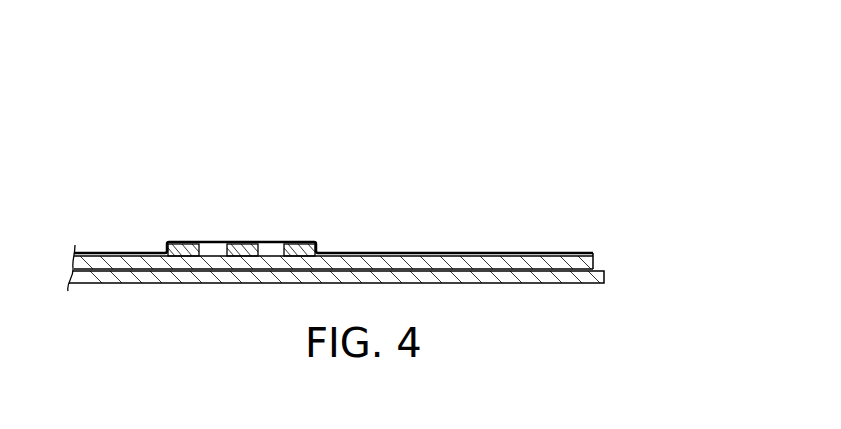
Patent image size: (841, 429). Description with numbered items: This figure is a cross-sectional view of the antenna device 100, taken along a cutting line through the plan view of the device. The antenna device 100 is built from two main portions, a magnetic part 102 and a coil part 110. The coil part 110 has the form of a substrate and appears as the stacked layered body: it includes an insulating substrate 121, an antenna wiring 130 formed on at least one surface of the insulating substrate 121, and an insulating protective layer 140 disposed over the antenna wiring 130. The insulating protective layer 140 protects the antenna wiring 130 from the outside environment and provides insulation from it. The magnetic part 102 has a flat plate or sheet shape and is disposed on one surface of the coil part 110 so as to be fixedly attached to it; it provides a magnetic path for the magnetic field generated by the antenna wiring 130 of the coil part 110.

The antenna device 100 is at (380, 115).
The magnetic part 102 is at (604, 276).
The coil part 110 is at (576, 253).
The insulating substrate 121 is at (594, 262).
The antenna wiring 130 is at (300, 244).
The insulating protective layer 140 is at (320, 247).